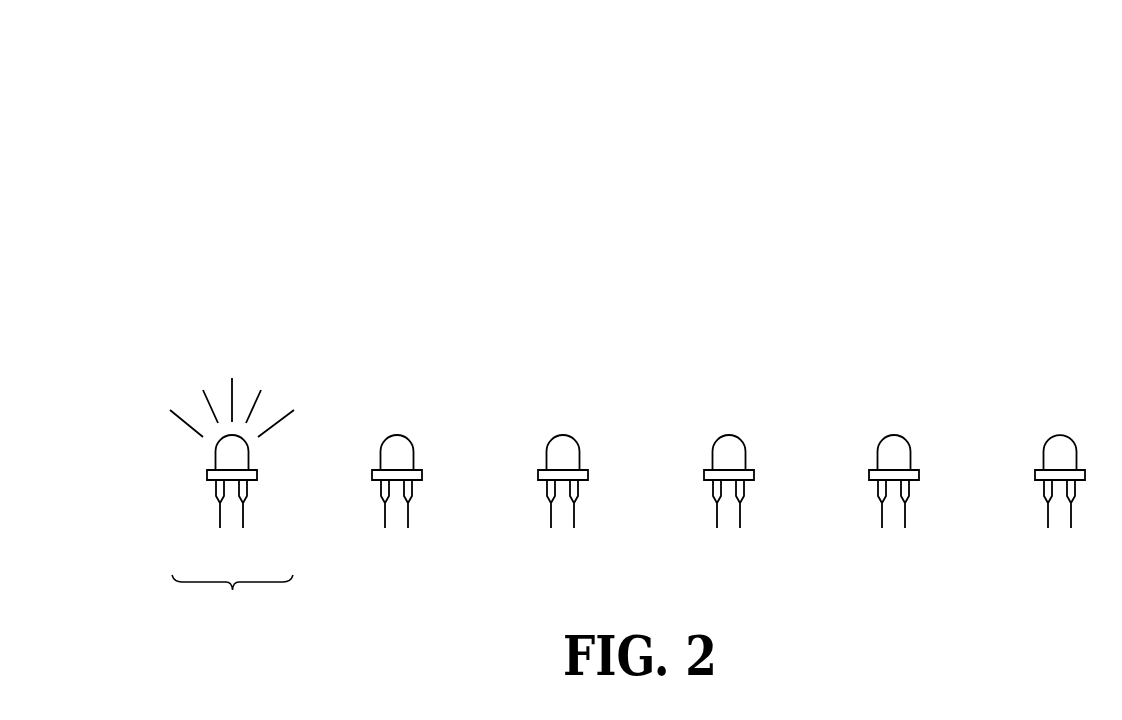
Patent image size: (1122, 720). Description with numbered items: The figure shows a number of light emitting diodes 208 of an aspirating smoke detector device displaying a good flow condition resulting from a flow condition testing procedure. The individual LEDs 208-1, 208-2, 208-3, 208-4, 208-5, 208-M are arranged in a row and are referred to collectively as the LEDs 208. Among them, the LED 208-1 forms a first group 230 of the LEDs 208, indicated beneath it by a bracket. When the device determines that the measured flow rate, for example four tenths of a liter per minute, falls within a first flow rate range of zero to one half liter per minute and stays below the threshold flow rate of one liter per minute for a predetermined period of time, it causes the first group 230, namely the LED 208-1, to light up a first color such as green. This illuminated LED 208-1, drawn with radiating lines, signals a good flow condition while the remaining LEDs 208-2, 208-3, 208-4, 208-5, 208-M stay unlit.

The light emitting diodes 208 is at (172, 96).
The LED 208-1 is at (235, 346).
The LED 208-2 is at (400, 346).
The LED 208-3 is at (566, 346).
The LED 208-4 is at (732, 346).
The LED 208-5 is at (897, 346).
The LED 208-M is at (1063, 346).
The first group 230 is at (232, 601).